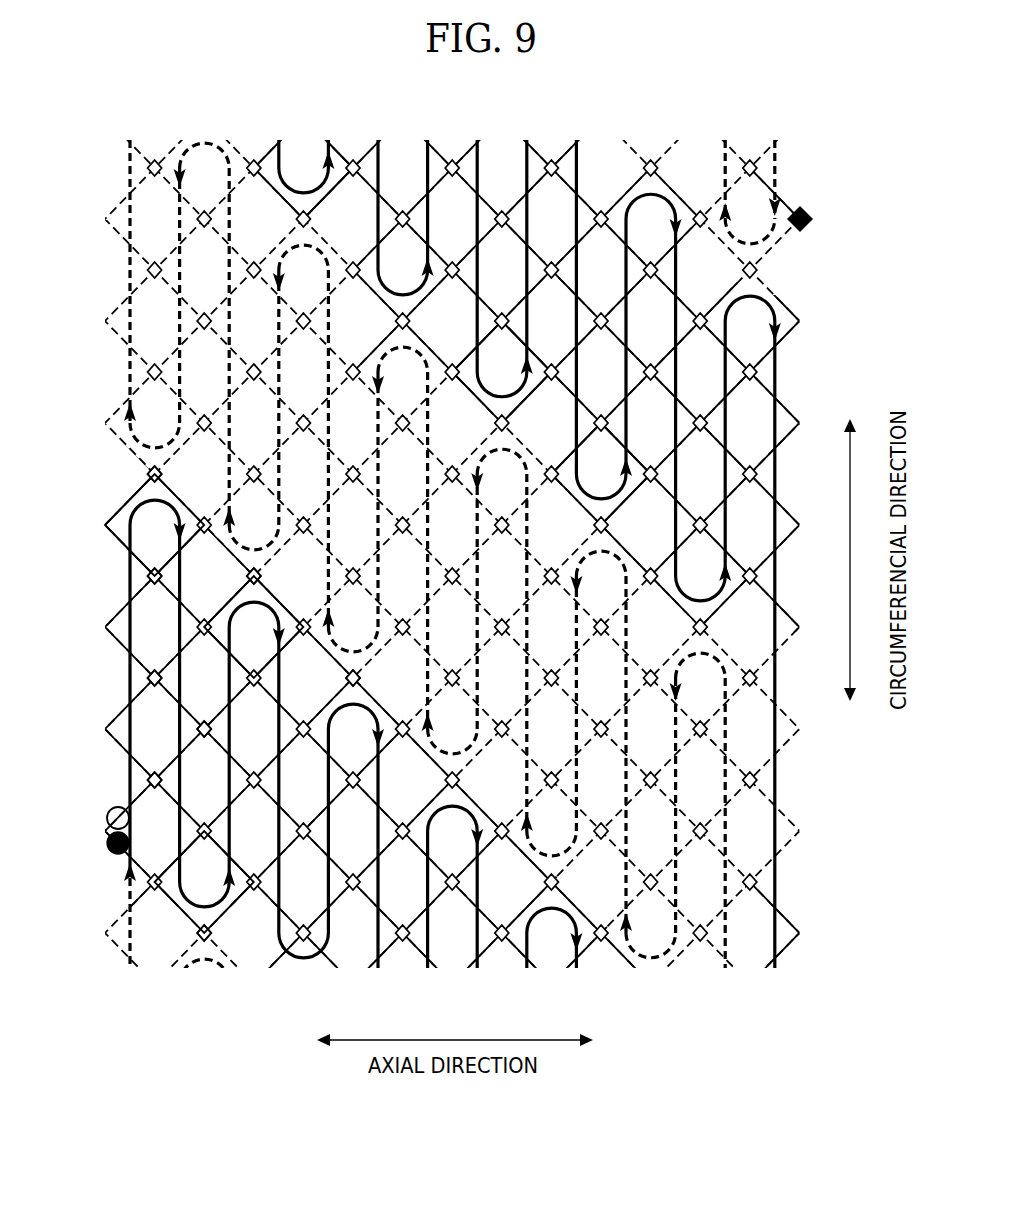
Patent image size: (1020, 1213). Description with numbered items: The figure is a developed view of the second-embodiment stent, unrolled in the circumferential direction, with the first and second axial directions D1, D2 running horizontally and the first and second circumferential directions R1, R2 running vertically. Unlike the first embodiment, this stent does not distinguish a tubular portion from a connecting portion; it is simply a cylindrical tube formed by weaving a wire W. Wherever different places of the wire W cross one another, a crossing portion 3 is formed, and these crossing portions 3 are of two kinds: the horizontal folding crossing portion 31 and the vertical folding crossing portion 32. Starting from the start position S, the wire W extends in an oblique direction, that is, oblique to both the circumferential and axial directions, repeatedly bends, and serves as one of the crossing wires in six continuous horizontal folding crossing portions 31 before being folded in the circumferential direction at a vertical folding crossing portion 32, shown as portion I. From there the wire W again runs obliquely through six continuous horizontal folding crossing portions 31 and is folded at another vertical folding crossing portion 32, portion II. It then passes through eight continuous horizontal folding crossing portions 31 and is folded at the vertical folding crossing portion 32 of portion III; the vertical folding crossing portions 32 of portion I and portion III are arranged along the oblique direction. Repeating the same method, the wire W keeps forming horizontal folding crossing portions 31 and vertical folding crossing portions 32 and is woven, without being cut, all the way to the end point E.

The crossing portion 3 is at (151, 463).
The horizontal folding crossing portion 31 is at (250, 574).
The vertical folding crossing portion 32 is at (152, 473).
The wire W is at (788, 306).
The start position S is at (106, 816).
The end point E is at (106, 846).
The portion I is at (154, 525).
The portion II is at (204, 882).
The portion III is at (253, 627).
The first circumferential direction R1 is at (850, 538).
The second circumferential direction R2 is at (850, 711).
The first axial direction D1 is at (605, 1040).
The second axial direction D2 is at (430, 1040).